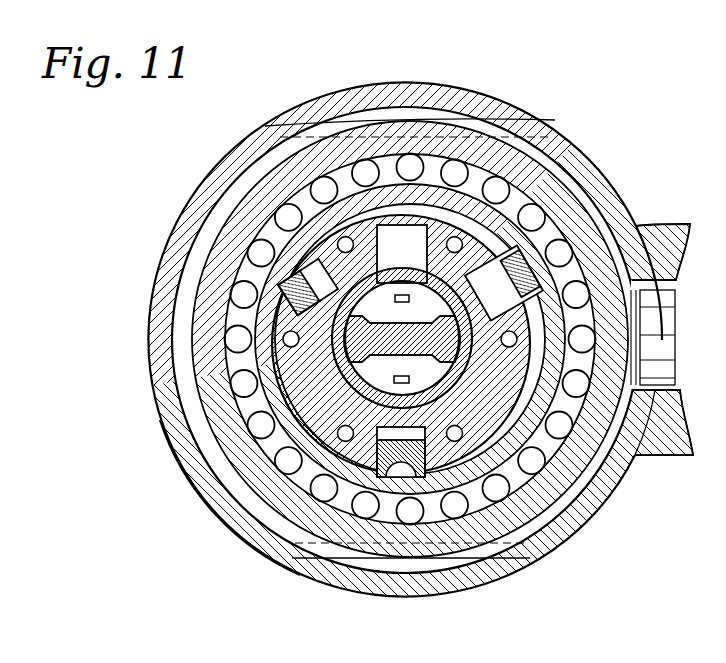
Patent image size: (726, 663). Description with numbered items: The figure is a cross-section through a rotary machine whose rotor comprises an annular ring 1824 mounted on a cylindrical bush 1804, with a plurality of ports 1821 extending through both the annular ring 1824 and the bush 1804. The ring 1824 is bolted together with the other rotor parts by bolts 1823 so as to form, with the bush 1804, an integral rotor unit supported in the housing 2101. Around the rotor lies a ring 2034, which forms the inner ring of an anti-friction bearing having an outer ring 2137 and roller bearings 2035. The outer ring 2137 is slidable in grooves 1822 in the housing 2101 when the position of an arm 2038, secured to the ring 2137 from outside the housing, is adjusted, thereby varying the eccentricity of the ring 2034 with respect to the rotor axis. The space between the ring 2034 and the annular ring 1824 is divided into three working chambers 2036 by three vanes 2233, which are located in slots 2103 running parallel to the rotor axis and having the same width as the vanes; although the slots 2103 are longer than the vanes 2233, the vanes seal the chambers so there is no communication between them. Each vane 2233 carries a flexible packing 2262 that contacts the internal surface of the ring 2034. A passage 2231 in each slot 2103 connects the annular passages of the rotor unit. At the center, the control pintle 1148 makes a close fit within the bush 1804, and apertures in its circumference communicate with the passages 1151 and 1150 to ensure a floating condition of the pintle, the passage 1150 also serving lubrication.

The housing 2101 is at (575, 158).
The roller bearings 2035 is at (630, 457).
The arm 2038 is at (645, 292).
The ring 2034 is at (590, 345).
The outer ring 2137 is at (235, 450).
The grooves 1822 is at (318, 128).
The vanes 2233 is at (332, 550).
The passage 2231 is at (343, 493).
The working chambers 2036 is at (588, 205).
The annular ring 1824 is at (398, 174).
The ports 1821 is at (447, 510).
The passage 1151 is at (345, 406).
The bolts 1823 is at (343, 236).
The cylindrical bush 1804 is at (318, 290).
The flexible packing 2262 is at (530, 243).
The slots 2103 is at (393, 440).
The passage 1150 is at (405, 288).
The control pintle 1148 is at (437, 328).